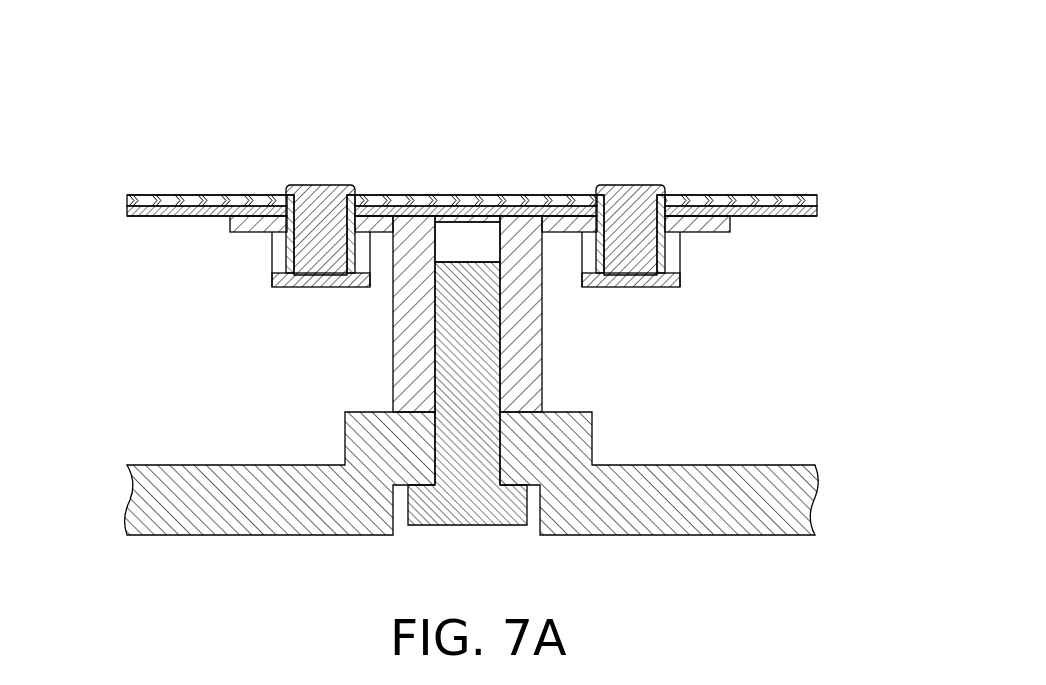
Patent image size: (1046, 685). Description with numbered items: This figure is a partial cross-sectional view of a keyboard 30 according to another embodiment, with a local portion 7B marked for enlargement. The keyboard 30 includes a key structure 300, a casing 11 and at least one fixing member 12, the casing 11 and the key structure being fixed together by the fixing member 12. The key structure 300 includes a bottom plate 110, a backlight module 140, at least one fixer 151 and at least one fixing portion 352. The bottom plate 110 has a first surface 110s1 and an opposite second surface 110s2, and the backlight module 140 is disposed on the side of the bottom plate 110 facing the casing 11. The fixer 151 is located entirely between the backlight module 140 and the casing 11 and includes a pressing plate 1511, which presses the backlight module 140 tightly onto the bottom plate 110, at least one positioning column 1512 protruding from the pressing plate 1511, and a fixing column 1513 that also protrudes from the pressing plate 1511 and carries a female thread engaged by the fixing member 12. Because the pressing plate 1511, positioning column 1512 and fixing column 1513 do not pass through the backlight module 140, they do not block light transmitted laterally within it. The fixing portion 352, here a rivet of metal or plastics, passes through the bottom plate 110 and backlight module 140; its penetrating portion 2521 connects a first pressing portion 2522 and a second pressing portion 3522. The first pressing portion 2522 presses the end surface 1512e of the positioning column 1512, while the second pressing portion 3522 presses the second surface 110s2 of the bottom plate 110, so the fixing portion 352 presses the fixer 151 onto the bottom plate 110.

The keyboard 30 is at (88, 30).
The key structure 300 is at (142, 154).
The local portion 7B is at (213, 195).
The bottom plate 110 is at (803, 197).
The second surface 110s2 is at (780, 193).
The first surface 110s1 is at (768, 217).
The backlight module 140 is at (815, 208).
The fixing portion 352 is at (350, 259).
The second pressing portion 3522 is at (228, 228).
The penetrating portion 2521 is at (285, 240).
The first pressing portion 2522 is at (272, 282).
The fixer 151 is at (563, 370).
The pressing plate 1511 is at (720, 227).
The positioning column 1512 is at (525, 372).
The end surface 1512e is at (369, 288).
The fixing column 1513 is at (500, 318).
The casing 11 is at (780, 503).
The fixing member 12 is at (485, 508).